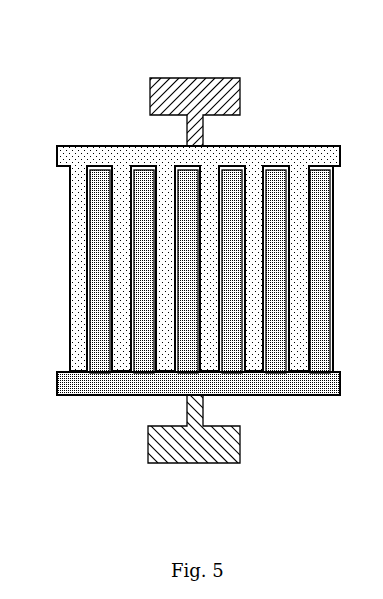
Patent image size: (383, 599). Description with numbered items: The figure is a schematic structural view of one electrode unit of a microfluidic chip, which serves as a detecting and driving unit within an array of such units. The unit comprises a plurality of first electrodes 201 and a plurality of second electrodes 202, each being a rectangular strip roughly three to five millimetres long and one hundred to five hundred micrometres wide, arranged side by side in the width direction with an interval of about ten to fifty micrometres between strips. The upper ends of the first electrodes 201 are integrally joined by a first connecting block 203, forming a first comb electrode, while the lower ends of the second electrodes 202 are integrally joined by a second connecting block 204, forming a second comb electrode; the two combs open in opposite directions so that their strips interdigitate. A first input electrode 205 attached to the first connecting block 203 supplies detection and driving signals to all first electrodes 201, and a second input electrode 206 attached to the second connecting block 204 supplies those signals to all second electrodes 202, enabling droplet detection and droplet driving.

The first electrode 201 is at (255, 180).
The second electrode 202 is at (145, 350).
The first connecting block 203 is at (127, 157).
The second connecting block 204 is at (268, 385).
The first input electrode 205 is at (203, 90).
The second input electrode 206 is at (205, 447).